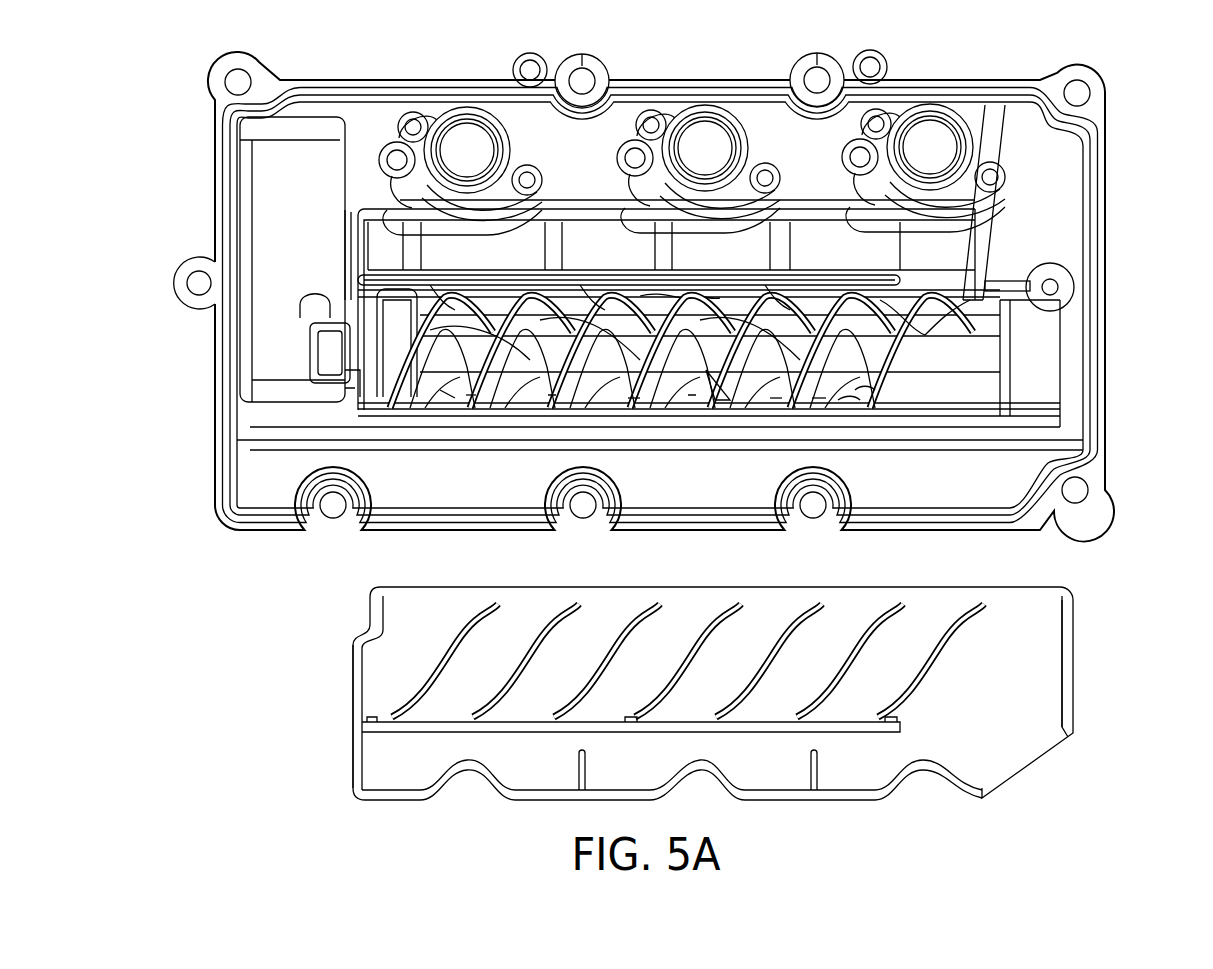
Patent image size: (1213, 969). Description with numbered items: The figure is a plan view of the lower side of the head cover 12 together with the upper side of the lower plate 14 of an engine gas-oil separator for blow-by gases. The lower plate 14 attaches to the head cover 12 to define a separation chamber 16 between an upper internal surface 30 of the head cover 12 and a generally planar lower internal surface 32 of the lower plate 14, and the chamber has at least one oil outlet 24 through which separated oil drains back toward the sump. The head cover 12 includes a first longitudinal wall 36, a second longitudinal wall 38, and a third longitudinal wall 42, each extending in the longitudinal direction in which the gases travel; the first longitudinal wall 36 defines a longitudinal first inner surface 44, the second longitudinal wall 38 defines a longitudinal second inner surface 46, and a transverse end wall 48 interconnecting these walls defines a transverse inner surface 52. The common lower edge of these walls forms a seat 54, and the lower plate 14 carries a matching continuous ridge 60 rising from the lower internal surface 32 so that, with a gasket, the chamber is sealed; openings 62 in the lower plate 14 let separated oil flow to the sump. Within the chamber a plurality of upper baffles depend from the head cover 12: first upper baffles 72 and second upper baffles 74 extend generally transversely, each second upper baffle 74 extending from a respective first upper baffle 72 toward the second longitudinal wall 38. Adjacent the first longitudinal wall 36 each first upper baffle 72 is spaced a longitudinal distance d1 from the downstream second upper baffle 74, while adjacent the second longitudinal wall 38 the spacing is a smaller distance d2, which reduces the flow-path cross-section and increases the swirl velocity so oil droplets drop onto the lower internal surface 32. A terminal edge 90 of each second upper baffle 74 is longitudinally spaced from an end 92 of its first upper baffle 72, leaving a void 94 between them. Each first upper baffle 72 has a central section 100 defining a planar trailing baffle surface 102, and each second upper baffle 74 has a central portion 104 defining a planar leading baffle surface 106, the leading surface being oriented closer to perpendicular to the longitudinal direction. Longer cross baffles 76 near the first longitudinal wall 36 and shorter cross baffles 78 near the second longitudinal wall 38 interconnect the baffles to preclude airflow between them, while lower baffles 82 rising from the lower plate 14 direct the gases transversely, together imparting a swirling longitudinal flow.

The head cover 12 is at (1013, 74).
The lower plate 14 is at (1108, 632).
The separation chamber 16 is at (386, 325).
The oil outlet 24 is at (945, 276).
The upper internal surface 30 is at (1030, 348).
The lower internal surface 32 is at (1062, 685).
The first longitudinal wall 36 is at (838, 275).
The second longitudinal wall 38 is at (714, 408).
The third longitudinal wall 42 is at (565, 210).
The longitudinal first inner surface 44 is at (688, 297).
The longitudinal second inner surface 46 is at (632, 405).
The transverse end wall 48 is at (357, 248).
The transverse inner surface 52 is at (380, 352).
The seat 54 is at (350, 236).
The continuous ridge 60 is at (353, 692).
The openings 62 is at (812, 775).
The first upper baffles 72 is at (844, 350).
The second upper baffles 74 is at (748, 385).
The longer cross baffles 76 is at (765, 285).
The shorter cross baffles 78 is at (692, 410).
The lower baffles 82 is at (950, 615).
The terminal edge 90 is at (845, 410).
The end 92 is at (775, 408).
The void 94 is at (860, 395).
The central section 100 is at (790, 355).
The trailing baffle surface 102 is at (818, 408).
The central portion 104 is at (470, 400).
The leading baffle surface 106 is at (448, 395).
The longitudinal distance d1 is at (700, 309).
The longitudinal distance d2 is at (597, 410).